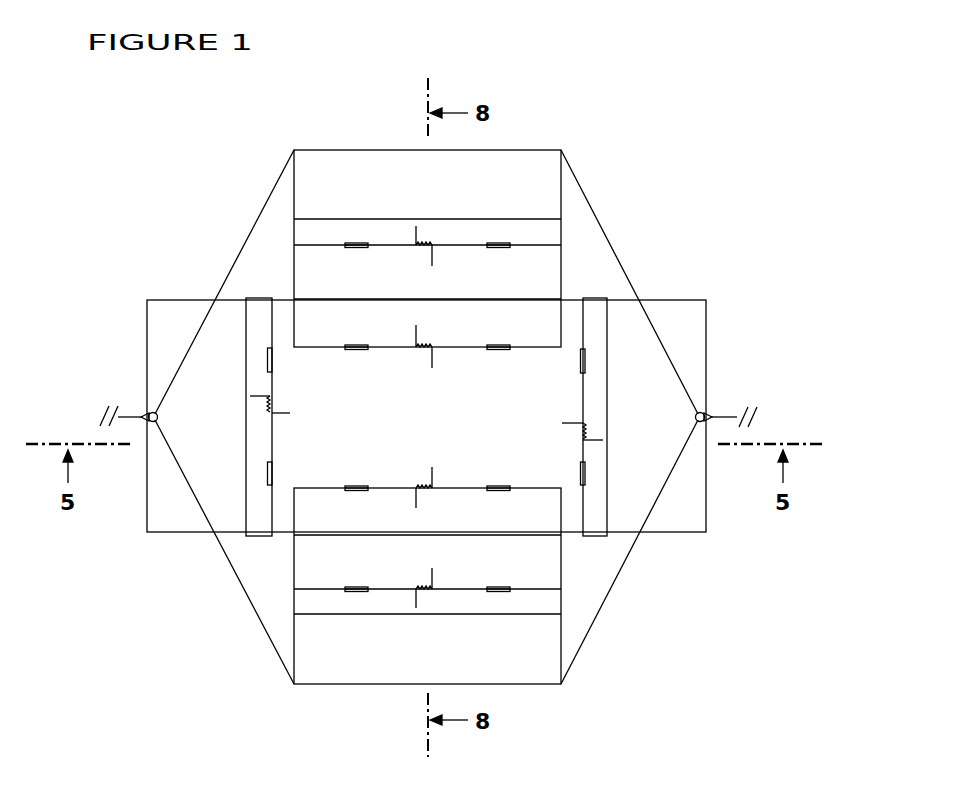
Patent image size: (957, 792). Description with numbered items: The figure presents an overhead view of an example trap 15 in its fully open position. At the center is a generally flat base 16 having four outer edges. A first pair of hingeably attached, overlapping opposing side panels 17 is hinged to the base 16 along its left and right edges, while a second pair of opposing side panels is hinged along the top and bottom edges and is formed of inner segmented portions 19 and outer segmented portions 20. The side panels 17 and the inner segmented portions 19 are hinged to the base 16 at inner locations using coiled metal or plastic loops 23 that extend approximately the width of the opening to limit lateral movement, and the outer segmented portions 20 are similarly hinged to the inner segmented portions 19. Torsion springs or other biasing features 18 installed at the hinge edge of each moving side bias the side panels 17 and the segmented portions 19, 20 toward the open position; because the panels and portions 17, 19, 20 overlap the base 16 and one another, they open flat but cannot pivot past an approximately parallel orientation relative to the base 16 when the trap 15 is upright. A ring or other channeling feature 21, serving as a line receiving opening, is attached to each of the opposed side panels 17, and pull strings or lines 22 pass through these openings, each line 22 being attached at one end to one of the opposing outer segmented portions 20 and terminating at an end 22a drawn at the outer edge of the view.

The trap 15 is at (703, 167).
The base 16 is at (277, 538).
The side panels 17 is at (147, 335).
The torsion springs or other biasing features 18 is at (433, 253).
The inner segmented portions 19 is at (562, 257).
The outer segmented portions 20 is at (343, 148).
The ring or other attached channeling feature 21 is at (158, 417).
The pull strings, lines, or other similar features 22 is at (266, 204).
The conductor end terminals 22a is at (122, 413).
The coiled metal or plastic loops 23 is at (357, 248).